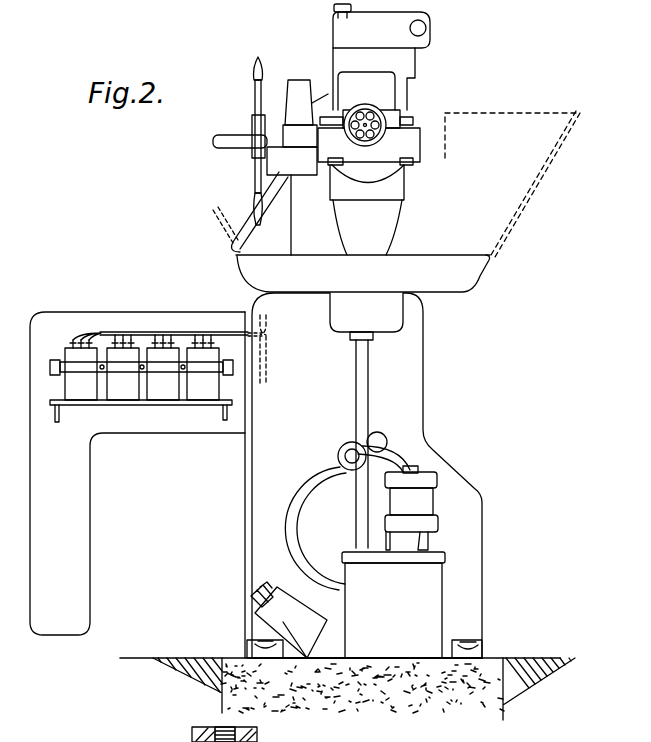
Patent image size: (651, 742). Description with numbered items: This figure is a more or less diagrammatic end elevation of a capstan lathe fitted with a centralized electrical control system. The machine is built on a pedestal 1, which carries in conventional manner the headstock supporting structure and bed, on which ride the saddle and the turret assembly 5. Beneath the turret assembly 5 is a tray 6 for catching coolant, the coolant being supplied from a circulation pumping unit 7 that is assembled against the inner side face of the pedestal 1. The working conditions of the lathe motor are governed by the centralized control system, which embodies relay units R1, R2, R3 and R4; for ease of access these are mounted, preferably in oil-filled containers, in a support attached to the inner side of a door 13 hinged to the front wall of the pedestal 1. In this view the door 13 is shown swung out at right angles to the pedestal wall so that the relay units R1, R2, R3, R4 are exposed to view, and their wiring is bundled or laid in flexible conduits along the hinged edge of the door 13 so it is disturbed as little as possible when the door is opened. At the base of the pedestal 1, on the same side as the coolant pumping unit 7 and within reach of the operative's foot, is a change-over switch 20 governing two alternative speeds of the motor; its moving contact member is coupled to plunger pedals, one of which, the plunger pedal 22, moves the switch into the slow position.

The pedestal 1 is at (364, 475).
The turret assembly 5 is at (403, 143).
The tray 6 is at (465, 280).
The circulation pumping unit 7 is at (393, 605).
The door 13 is at (139, 485).
The change-over switch 20 is at (252, 622).
The plunger pedal 22 is at (256, 594).
The relay unit R1 is at (90, 394).
The relay unit R2 is at (128, 394).
The relay unit R3 is at (173, 394).
The relay unit R4 is at (210, 394).